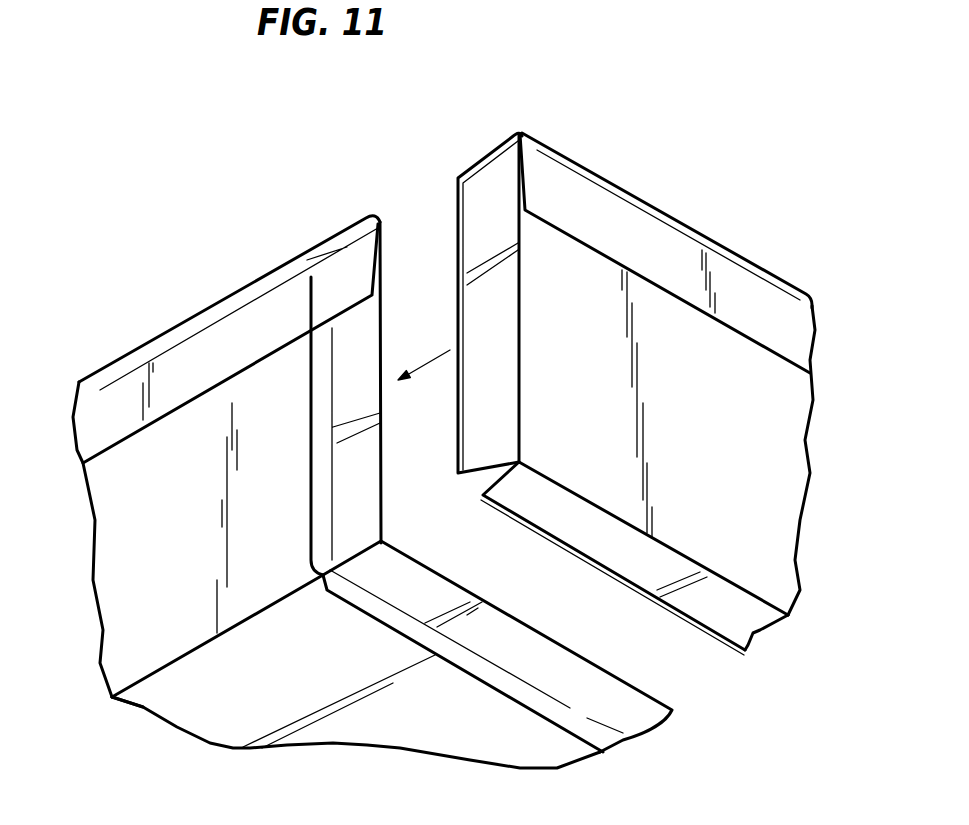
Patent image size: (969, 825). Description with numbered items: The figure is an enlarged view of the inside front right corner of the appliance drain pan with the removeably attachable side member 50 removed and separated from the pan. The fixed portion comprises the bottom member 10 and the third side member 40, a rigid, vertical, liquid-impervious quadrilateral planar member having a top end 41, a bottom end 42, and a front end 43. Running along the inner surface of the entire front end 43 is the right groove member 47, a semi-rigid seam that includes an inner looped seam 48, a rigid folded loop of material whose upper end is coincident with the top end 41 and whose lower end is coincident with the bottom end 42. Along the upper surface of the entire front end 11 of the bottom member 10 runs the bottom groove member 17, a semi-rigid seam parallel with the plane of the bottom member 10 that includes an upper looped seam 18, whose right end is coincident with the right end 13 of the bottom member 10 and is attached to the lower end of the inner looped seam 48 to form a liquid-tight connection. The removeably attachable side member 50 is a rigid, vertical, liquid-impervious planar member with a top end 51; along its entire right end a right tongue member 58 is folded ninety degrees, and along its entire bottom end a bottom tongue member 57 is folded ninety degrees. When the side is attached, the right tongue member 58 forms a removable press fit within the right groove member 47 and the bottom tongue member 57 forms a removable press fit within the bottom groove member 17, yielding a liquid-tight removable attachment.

The bottom member 10 is at (262, 713).
The front end of bottom member 11 is at (497, 675).
The right end of bottom member 13 is at (152, 680).
The bottom groove member 17 is at (497, 675).
The upper looped seam 18 is at (618, 693).
The third side member 40 is at (182, 547).
The top end of third side member 41 is at (198, 350).
The bottom end of third side member 42 is at (170, 652).
The front end of third side member 43 is at (325, 368).
The right groove member 47 is at (325, 368).
The inner looped seam 48 is at (352, 350).
The removeably attachable side member 50 is at (740, 477).
The top end of removeably attachable side member 51 is at (758, 302).
The bottom tongue member 57 is at (753, 630).
The right tongue member 58 is at (483, 185).